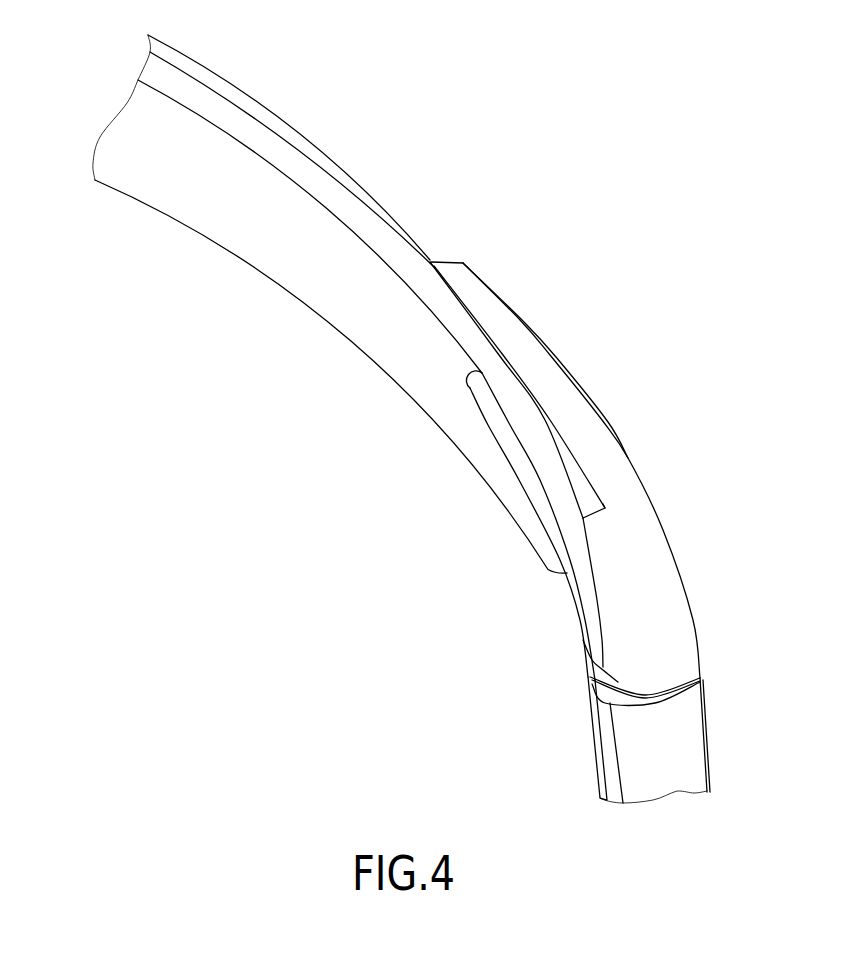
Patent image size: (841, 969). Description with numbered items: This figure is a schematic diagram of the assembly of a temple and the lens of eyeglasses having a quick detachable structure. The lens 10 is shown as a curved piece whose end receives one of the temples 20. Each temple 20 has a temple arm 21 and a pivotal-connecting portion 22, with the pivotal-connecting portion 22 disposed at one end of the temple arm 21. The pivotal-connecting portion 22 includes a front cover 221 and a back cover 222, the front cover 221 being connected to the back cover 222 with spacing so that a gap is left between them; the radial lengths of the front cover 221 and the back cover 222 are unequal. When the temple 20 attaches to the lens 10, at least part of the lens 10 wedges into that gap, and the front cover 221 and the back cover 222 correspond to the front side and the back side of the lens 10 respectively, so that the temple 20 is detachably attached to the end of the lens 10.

The lens 10 is at (290, 163).
The temple 20 is at (752, 410).
The temple arm 21 is at (672, 730).
The pivotal-connecting portion 22 is at (573, 472).
The front cover 221 is at (518, 440).
The back cover 222 is at (595, 437).